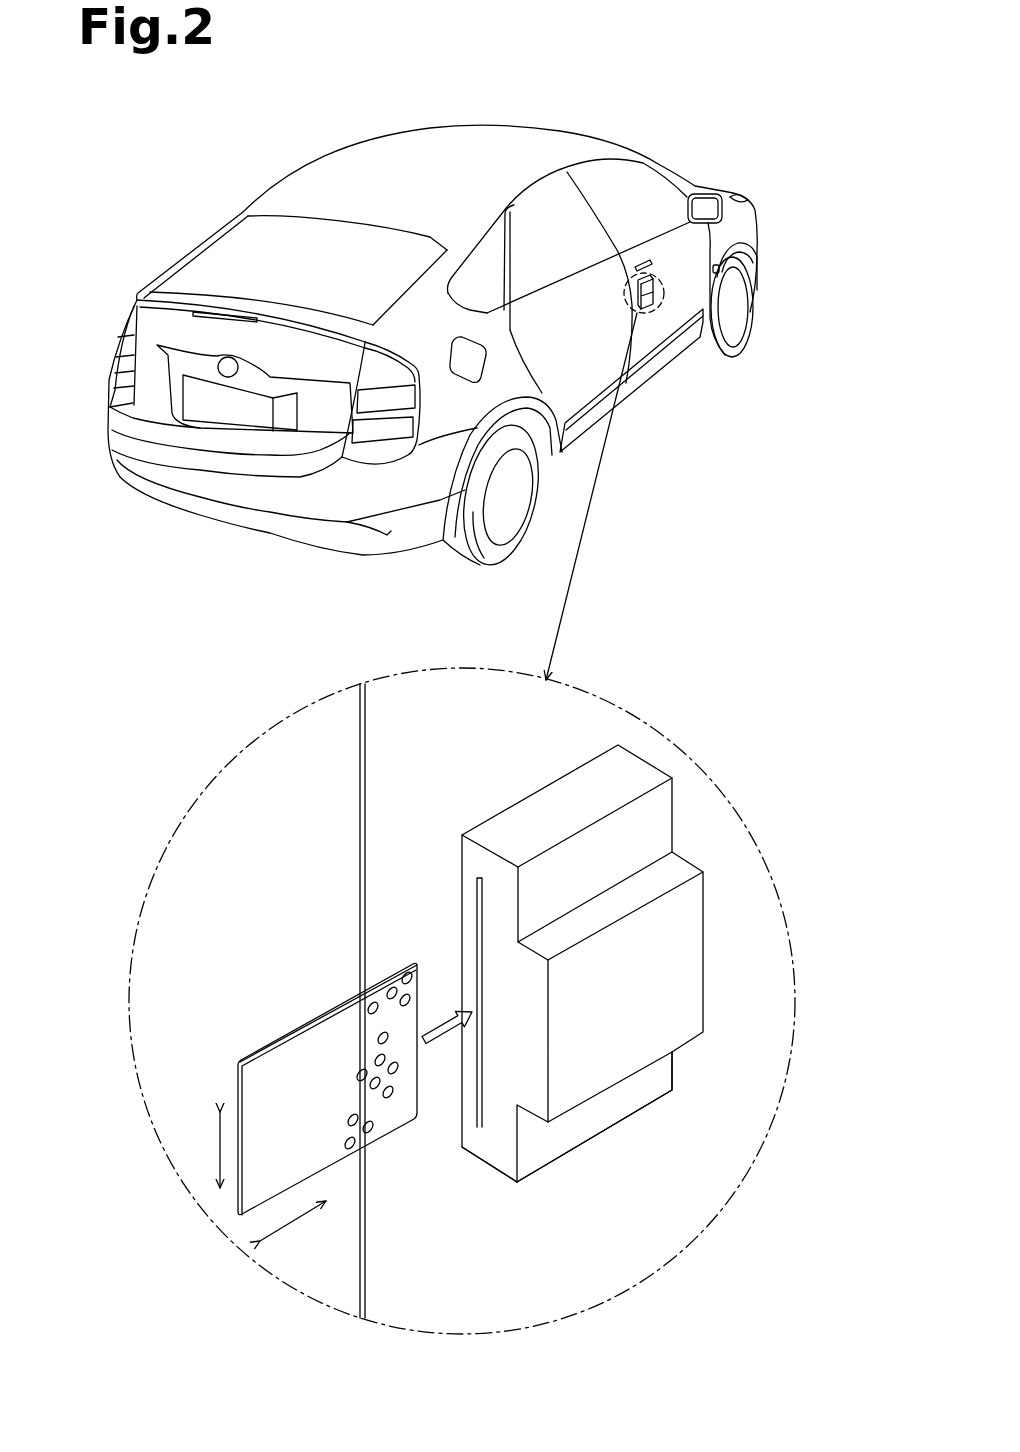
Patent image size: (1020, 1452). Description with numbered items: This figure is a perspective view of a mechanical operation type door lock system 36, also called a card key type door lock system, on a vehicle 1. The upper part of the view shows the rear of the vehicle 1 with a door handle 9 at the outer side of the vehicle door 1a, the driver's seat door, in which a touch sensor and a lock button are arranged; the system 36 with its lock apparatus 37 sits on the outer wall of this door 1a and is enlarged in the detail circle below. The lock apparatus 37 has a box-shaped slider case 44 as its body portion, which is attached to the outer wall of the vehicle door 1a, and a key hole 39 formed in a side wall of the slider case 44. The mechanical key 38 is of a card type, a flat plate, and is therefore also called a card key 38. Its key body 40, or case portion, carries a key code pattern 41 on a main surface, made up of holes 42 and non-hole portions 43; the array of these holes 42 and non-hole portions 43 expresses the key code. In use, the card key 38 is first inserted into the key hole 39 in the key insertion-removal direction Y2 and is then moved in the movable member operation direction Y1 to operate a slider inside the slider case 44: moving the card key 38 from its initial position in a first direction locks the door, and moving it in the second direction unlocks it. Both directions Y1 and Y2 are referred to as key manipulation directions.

The vehicle 1 is at (343, 125).
The vehicle door 1a is at (375, 803).
The door handle 9 is at (641, 262).
The mechanical operation type door lock system 36 is at (656, 283).
The lock apparatus 37 is at (653, 296).
The mechanical key 38 is at (268, 1043).
The key hole 39 is at (481, 896).
The key body 40 is at (325, 1028).
The key code pattern 41 is at (402, 974).
The holes 42 is at (371, 1136).
The non-hole portions 43 is at (397, 1045).
The slider case 44 is at (630, 1100).
The movable member operation direction Y1 is at (212, 1141).
The key insertion-removal direction Y2 is at (293, 1222).